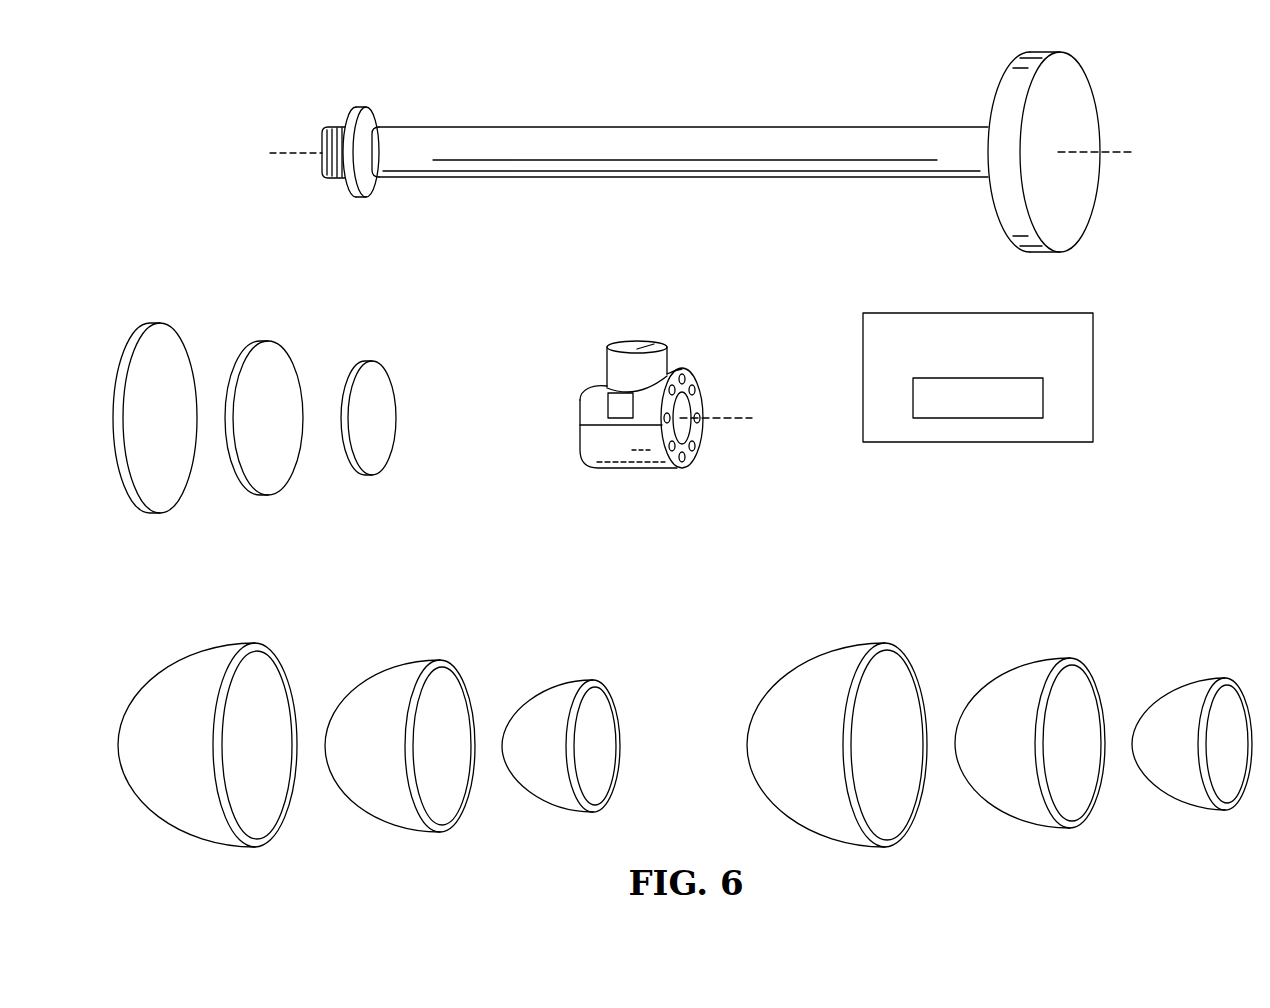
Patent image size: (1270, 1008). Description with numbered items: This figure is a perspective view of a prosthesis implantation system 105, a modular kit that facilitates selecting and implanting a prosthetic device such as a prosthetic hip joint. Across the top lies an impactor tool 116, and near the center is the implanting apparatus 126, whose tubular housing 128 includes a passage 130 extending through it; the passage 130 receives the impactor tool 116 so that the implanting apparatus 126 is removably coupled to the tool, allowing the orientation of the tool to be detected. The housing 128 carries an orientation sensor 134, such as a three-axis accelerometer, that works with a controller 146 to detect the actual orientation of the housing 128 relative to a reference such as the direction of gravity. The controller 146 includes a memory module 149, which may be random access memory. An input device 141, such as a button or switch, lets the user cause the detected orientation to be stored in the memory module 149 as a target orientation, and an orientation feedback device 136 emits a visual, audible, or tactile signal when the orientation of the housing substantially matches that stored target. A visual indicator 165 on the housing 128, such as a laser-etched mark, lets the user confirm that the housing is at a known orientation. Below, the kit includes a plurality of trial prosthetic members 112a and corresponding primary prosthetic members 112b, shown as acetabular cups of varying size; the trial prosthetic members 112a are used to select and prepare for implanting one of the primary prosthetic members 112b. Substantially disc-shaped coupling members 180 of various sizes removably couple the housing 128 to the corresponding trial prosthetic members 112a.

The prosthesis implantation system 105 is at (214, 121).
The impactor tool 116 is at (660, 126).
The coupling members 180 is at (400, 311).
The implanting apparatus 126 is at (556, 391).
The housing 128 is at (645, 395).
The input device 141 is at (638, 342).
The visual indicator 165 is at (655, 342).
The orientation sensor 134 is at (584, 398).
The orientation feedback device 136 is at (693, 379).
The passage 130 is at (683, 428).
The controller 146 is at (1093, 335).
The memory module 149 is at (1043, 395).
The trial prosthetic members 112a is at (395, 559).
The primary prosthetic members 112b is at (935, 559).